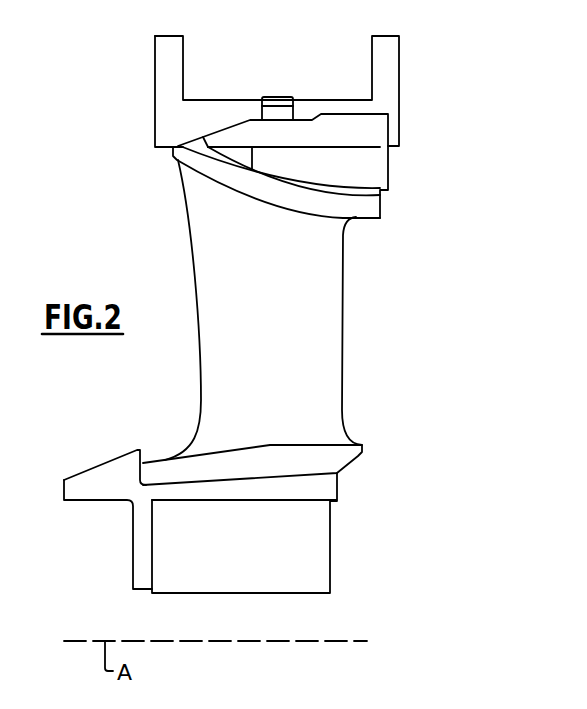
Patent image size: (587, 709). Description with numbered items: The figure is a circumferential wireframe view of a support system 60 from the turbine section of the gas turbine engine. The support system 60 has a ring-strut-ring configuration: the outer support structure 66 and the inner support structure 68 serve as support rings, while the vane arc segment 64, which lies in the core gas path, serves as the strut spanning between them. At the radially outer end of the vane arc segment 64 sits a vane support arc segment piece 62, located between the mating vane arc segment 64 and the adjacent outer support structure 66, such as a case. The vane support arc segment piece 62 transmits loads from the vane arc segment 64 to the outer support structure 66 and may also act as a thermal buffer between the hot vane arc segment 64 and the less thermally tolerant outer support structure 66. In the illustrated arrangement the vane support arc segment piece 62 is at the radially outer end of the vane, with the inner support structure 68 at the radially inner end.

The support system 60 is at (408, 173).
The vane support arc segment piece 62 is at (360, 128).
The vane arc segment 64 is at (326, 354).
The outer support structure 66 is at (392, 80).
The inner support structure 68 is at (330, 553).